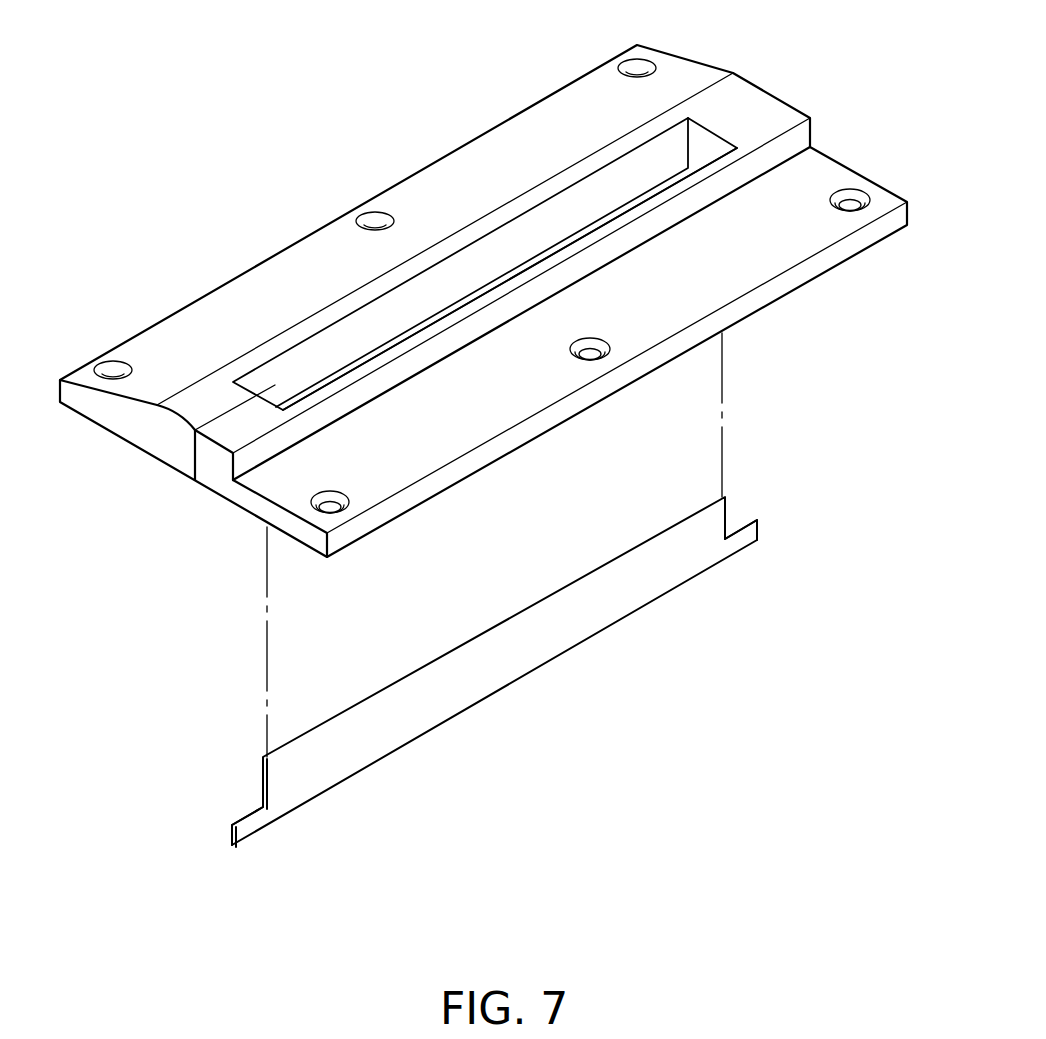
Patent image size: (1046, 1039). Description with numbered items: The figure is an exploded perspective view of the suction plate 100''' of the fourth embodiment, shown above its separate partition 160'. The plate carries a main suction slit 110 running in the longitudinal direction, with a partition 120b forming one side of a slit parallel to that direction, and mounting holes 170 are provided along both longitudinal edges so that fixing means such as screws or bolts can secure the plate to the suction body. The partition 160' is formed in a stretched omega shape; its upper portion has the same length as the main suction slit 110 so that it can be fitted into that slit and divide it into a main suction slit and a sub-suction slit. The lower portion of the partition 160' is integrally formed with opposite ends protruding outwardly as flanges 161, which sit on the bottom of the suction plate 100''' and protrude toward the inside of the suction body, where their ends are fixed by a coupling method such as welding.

The suction plate 100''' is at (483, 301).
The main suction slit 110 is at (524, 245).
The partition 120b is at (662, 202).
The mounting holes 170 is at (112, 370).
The partition 160' is at (530, 690).
The flanges 161 is at (757, 534).